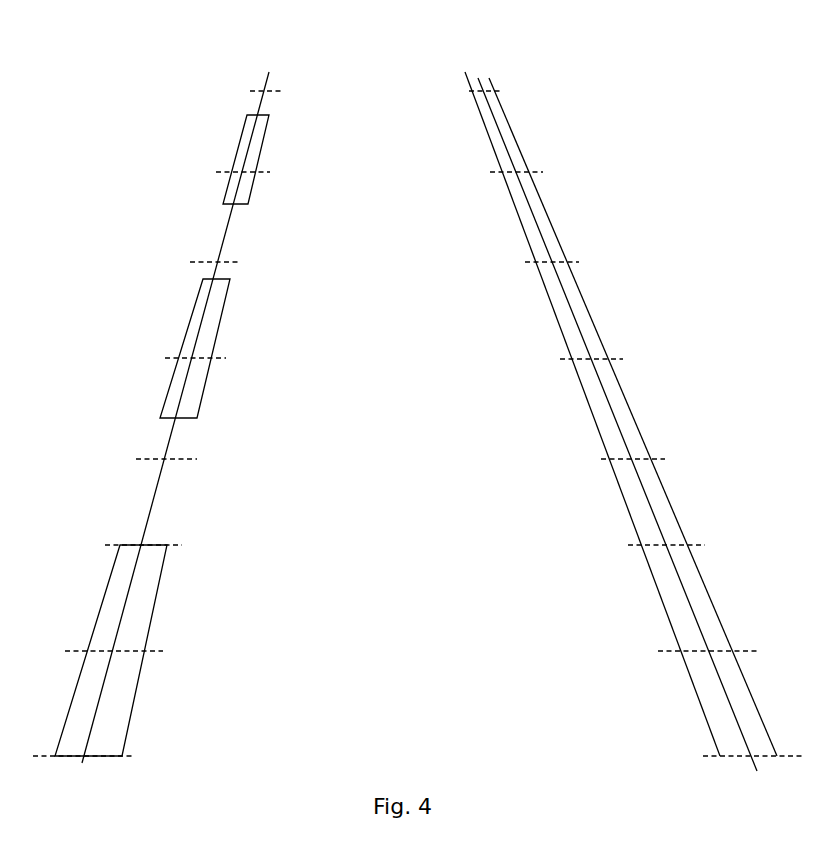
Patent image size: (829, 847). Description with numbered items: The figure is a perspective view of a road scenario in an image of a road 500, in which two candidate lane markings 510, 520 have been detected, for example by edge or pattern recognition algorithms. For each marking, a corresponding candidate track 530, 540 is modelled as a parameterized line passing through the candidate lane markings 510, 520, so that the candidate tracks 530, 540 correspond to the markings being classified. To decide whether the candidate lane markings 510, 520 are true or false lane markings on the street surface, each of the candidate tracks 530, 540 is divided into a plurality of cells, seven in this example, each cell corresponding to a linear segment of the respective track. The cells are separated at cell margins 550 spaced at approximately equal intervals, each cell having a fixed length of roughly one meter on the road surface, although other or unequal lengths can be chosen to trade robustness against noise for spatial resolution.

The image of a road 500 is at (690, 37).
The candidate lane marking 510 is at (146, 608).
The candidate lane marking 520 is at (665, 611).
The candidate track 530 is at (89, 772).
The candidate track 540 is at (748, 780).
The cell margins 550 is at (513, 262).